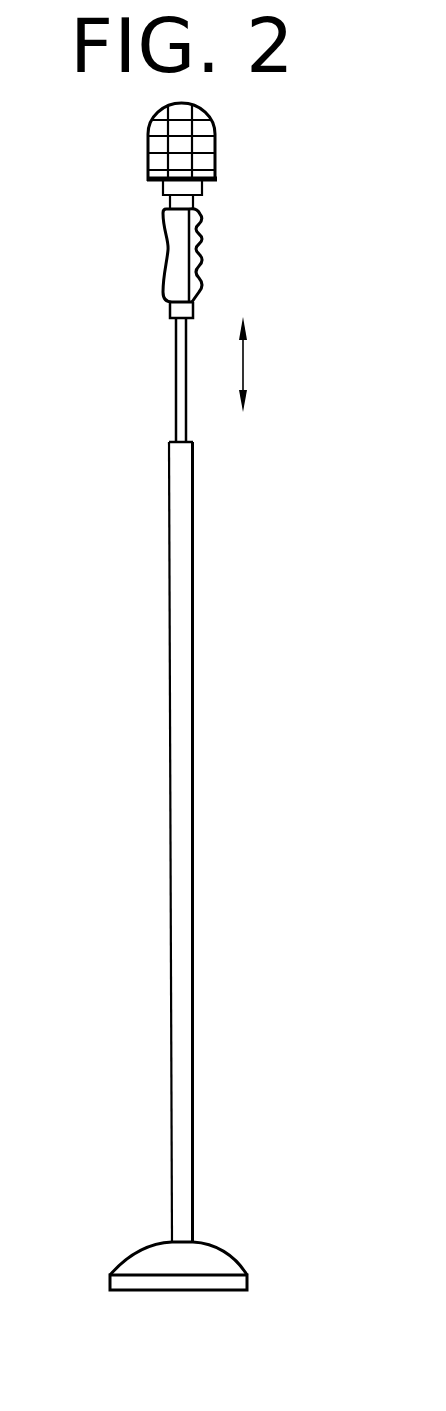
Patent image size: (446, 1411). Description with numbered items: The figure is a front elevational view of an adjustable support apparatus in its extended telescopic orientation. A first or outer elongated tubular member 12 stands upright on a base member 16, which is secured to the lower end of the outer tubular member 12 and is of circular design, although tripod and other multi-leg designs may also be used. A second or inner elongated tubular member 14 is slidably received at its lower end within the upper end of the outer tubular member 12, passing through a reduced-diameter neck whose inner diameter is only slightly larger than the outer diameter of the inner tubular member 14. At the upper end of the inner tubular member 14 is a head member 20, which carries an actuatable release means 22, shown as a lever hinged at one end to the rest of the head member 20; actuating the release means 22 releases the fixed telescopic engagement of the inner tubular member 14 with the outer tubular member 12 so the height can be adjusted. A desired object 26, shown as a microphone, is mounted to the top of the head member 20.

The first or outer elongated tubular member 12 is at (169, 650).
The second or inner elongated tubular member 14 is at (174, 377).
The base member 16 is at (132, 1252).
The head member 20 is at (160, 256).
The actuatable release means 22 is at (202, 277).
The object 26 is at (217, 160).